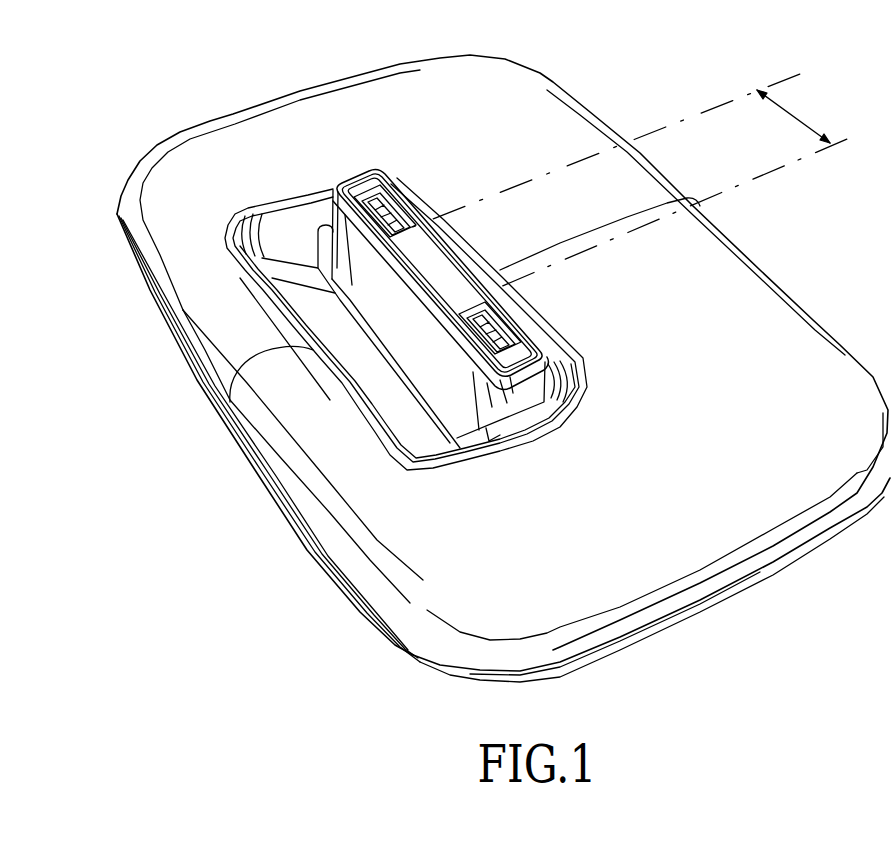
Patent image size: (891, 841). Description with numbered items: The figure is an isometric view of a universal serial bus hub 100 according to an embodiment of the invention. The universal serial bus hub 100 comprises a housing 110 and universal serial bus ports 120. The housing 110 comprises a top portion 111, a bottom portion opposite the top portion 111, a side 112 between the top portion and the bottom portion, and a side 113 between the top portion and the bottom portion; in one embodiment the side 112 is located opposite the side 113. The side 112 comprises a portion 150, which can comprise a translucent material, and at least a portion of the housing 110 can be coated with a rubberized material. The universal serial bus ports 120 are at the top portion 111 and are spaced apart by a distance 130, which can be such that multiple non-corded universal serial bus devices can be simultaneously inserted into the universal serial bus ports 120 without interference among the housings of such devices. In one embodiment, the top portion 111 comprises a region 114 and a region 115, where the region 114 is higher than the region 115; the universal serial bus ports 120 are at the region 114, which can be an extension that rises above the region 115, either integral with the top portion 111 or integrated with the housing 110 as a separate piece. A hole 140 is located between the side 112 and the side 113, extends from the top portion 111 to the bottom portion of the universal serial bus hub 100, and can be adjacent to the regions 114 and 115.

The universal serial bus hub 100 is at (493, 392).
The housing 110 is at (247, 150).
The top portion 111 is at (630, 560).
The side 112 is at (197, 335).
The side 113 is at (784, 252).
The region 114 is at (452, 277).
The region 115 is at (811, 438).
The universal serial bus port 120 is at (397, 205).
The distance 130 is at (631, 180).
The hole 140 is at (397, 427).
The portion 150 is at (400, 638).